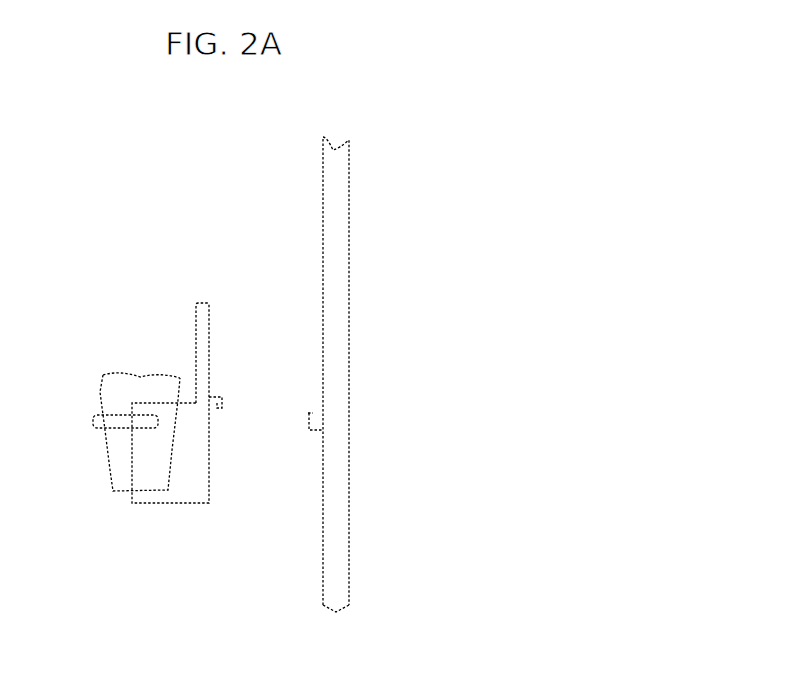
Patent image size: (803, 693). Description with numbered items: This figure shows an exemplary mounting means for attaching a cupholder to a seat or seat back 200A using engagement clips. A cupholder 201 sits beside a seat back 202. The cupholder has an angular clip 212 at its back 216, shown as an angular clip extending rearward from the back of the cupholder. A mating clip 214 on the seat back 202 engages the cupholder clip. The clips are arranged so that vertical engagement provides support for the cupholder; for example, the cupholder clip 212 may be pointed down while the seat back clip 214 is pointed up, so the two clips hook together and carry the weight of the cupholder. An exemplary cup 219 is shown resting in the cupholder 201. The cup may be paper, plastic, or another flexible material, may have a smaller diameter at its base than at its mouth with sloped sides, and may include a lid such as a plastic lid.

The seat or seat back 200A is at (492, 143).
The seat back 202 is at (338, 350).
The mating clip 214 is at (302, 433).
The back of the cupholder 216 is at (205, 500).
The angular clip 212 is at (225, 388).
The cupholder 201 is at (112, 470).
The cup 219 is at (107, 372).